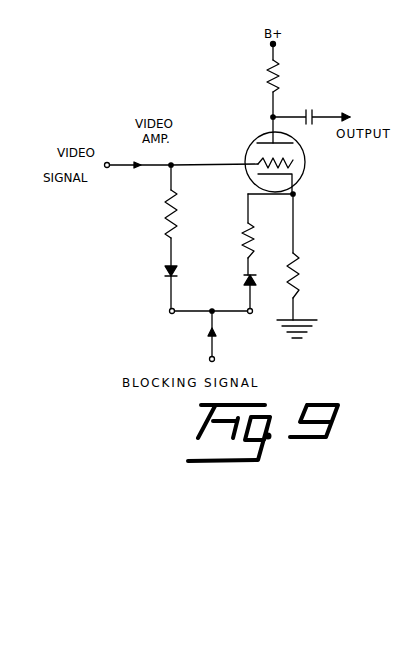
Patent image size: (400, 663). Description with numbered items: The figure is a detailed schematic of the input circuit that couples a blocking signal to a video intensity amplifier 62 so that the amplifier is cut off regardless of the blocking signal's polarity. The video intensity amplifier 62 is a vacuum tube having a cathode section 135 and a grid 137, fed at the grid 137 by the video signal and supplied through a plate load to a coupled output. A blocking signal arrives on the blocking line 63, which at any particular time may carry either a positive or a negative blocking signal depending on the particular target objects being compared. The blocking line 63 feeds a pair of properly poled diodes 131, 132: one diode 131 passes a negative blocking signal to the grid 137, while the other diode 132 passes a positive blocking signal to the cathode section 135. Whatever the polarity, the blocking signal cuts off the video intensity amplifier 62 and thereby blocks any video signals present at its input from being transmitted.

The video amplifier tube 62 is at (270, 172).
The grid 137 is at (257, 165).
The cathode section 135 is at (297, 186).
The diode 131 is at (164, 273).
The diode 132 is at (243, 282).
The blocking line 63 is at (208, 340).